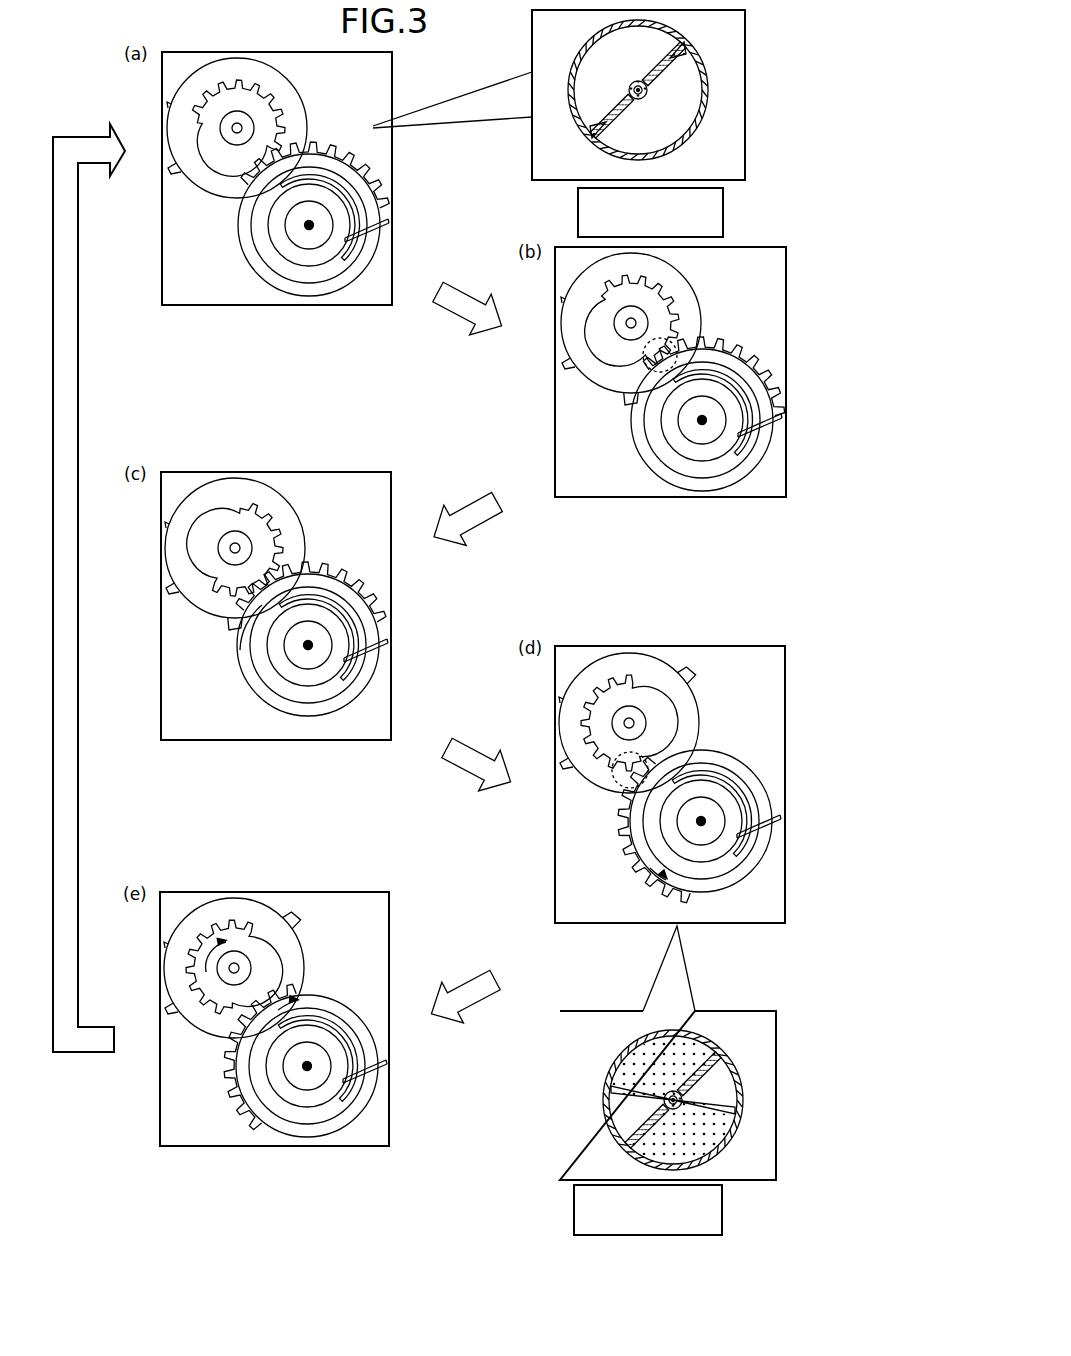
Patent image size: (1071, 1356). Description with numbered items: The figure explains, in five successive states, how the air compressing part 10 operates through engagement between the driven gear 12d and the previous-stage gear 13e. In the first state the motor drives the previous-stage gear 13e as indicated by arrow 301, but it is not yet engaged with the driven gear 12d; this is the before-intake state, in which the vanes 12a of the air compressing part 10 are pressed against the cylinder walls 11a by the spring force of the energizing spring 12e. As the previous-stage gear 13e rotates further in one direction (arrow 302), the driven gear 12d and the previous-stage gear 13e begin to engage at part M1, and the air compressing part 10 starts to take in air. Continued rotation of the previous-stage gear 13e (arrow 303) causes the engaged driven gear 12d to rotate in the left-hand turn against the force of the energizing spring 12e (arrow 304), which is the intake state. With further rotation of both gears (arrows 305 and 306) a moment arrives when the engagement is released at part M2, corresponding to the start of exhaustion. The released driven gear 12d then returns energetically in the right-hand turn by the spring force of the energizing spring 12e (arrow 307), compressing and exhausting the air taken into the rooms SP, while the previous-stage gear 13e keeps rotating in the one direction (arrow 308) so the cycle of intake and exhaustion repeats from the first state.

The air compressing part 10 is at (556, 40).
The cylinder walls 11a is at (684, 73).
The vanes 12a is at (690, 42).
The driven gear 12d is at (371, 290).
The energizing spring 12e is at (389, 222).
The previous-stage gear 13e is at (205, 88).
The arrow 301 is at (265, 135).
The arrow 302 is at (616, 347).
The arrow 303 is at (208, 568).
The arrow 304 is at (240, 650).
The arrow 305 is at (600, 708).
The arrow 306 is at (625, 835).
The arrow 307 is at (237, 1077).
The arrow 308 is at (206, 966).
The part M1 is at (677, 351).
The part M2 is at (618, 785).
The rooms SP is at (700, 1048).